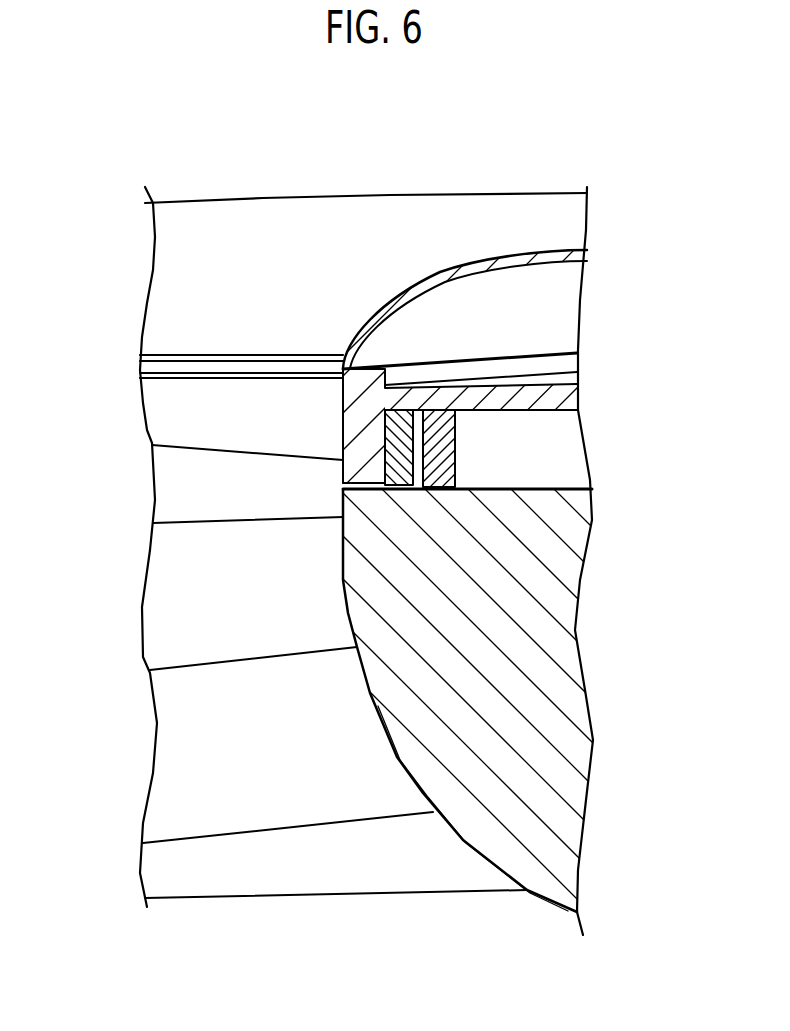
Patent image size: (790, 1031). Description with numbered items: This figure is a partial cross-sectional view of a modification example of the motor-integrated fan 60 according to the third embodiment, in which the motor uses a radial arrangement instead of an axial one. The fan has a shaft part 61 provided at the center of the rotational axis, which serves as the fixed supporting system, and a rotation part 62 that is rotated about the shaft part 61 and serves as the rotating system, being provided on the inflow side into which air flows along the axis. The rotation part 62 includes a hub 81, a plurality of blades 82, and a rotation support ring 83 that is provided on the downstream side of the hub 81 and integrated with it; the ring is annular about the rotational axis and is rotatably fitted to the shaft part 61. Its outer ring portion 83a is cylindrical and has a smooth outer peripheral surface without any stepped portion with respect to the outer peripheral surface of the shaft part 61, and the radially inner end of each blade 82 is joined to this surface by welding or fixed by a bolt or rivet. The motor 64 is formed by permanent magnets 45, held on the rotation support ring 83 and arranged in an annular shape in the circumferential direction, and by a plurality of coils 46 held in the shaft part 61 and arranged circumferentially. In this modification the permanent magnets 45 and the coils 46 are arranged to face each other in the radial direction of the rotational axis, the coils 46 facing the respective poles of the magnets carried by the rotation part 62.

The motor-integrated fan 60 is at (355, 190).
The shaft part 61 is at (459, 846).
The rotation part 62 is at (458, 268).
The motor 64 is at (447, 509).
The permanent magnets 45 is at (393, 462).
The coils 46 is at (455, 450).
The hub 81 is at (525, 253).
The blades 82 is at (193, 403).
The rotation support ring 83 is at (338, 395).
The outer ring portion 83a is at (363, 428).